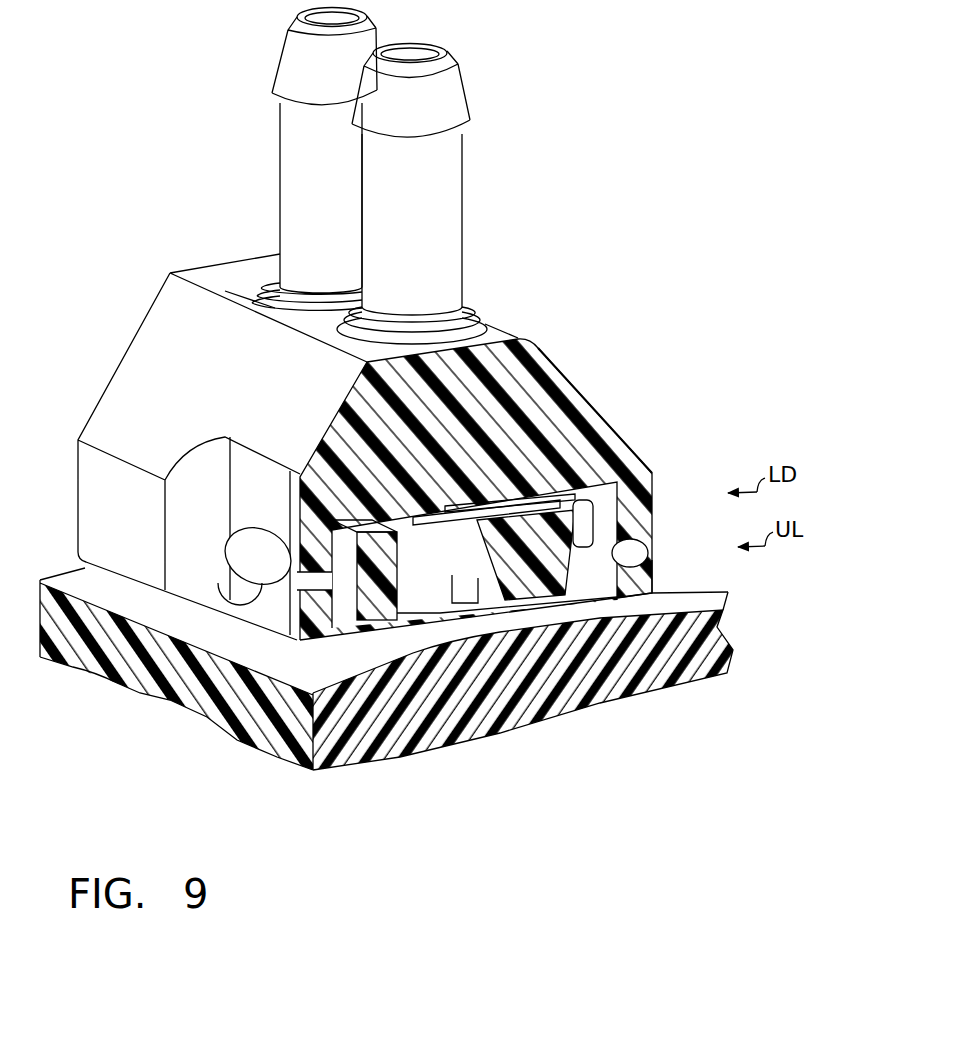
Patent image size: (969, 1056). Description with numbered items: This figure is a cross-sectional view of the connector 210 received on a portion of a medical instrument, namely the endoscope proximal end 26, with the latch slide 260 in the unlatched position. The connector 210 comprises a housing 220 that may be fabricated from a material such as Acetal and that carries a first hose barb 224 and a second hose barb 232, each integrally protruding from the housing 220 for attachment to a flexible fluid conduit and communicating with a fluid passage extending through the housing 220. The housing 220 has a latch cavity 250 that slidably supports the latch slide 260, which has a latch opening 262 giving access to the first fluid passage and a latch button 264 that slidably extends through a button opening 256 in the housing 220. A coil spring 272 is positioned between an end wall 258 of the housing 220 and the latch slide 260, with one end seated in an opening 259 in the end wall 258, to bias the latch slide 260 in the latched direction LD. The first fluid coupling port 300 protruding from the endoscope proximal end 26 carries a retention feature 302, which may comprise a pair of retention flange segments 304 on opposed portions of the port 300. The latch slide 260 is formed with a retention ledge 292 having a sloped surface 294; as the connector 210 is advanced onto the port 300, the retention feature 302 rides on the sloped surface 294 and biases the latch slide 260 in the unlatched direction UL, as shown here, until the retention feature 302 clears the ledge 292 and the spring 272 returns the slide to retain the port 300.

The endoscope proximal end 26 is at (635, 703).
The connector 210 is at (647, 178).
The housing 220 is at (590, 409).
The first hose barb 224 is at (471, 231).
The second hose barb 232 is at (276, 172).
The latch cavity 250 is at (649, 546).
The button opening 256 is at (270, 607).
The end wall 258 is at (653, 573).
The opening 259 is at (585, 428).
The latch slide 260 is at (659, 591).
The latch opening 262 is at (397, 597).
The latch button 264 is at (207, 590).
The coil spring 272 is at (595, 521).
The retention ledge 292 is at (562, 572).
The sloped surface 294 is at (473, 578).
The first fluid coupling port 300 is at (446, 624).
The retention feature 302 is at (458, 500).
The retention flange segments 304 is at (452, 520).